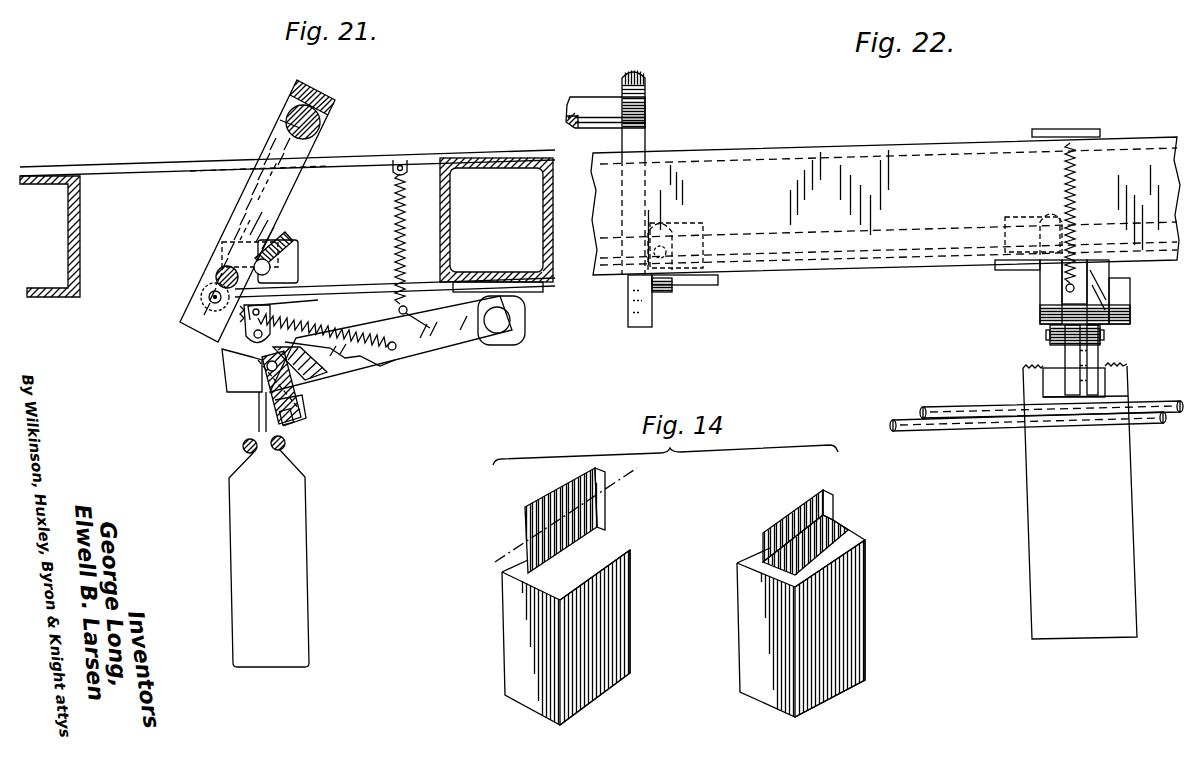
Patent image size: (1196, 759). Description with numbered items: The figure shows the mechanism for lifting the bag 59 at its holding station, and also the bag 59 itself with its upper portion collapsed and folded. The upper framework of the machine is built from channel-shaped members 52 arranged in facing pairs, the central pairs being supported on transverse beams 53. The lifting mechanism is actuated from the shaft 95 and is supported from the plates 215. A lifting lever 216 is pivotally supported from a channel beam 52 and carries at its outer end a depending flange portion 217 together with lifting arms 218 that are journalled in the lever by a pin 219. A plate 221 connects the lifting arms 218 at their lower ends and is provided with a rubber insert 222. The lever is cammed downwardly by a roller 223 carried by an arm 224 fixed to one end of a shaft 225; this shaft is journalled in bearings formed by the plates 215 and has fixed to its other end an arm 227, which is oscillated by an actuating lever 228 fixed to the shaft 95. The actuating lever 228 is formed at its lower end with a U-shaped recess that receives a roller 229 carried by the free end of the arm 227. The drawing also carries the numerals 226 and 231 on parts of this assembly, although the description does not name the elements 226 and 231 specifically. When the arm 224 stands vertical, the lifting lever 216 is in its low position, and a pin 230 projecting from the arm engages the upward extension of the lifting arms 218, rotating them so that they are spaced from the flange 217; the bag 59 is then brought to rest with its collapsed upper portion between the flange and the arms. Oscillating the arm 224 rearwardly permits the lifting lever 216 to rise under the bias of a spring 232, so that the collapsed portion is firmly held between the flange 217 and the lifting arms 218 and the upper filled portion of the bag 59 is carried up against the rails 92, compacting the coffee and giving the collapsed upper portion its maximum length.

In FIG. 21, the channel-shaped member 52 is at (466, 160).
In FIG. 21, the transverse beam 53 is at (80, 213).
In FIG. 21, the bag 59 is at (297, 538).
In FIG. 22, the bag 59 is at (1122, 513).
In FIG. 14, the bag 59 is at (622, 625).
In FIG. 21, the rails 92 is at (243, 445).
In FIG. 22, the rails 92 is at (964, 421).
In FIG. 21, the shaft 95 is at (320, 120).
In FIG. 22, the shaft 95 is at (596, 98).
In FIG. 21, the plates 215 is at (173, 164).
In FIG. 21, the lifting lever 216 is at (462, 350).
In FIG. 21, the depending flange portion 217 is at (259, 416).
In FIG. 21, the lifting arms 218 is at (298, 396).
In FIG. 22, the lifting arms 218 is at (1092, 362).
In FIG. 21, the pin 219 is at (243, 371).
In FIG. 22, the pin 219 is at (1048, 338).
In FIG. 21, the plate 221 is at (305, 412).
In FIG. 22, the plate 221 is at (1107, 378).
In FIG. 21, the rubber insert 222 is at (292, 422).
In FIG. 21, the roller 223 is at (318, 374).
In FIG. 21, the arm 224 is at (300, 312).
In FIG. 22, the arm 224 is at (1050, 288).
In FIG. 21, the shaft 225 is at (283, 254).
In FIG. 22, the shaft 225 is at (902, 240).
In FIG. 22, the guide 226 is at (703, 230).
In FIG. 21, the arm 227 is at (190, 270).
In FIG. 22, the arm 227 is at (672, 291).
In FIG. 21, the actuating lever 228 is at (283, 189).
In FIG. 22, the actuating lever 228 is at (646, 136).
In FIG. 21, the roller 229 is at (201, 298).
In FIG. 22, the roller 229 is at (628, 308).
In FIG. 21, the pin 230 is at (243, 326).
In FIG. 22, the pin 230 is at (1100, 278).
In FIG. 21, the coil spring 231 is at (392, 362).
In FIG. 22, the coil spring 231 is at (1128, 296).
In FIG. 21, the spring 232 is at (397, 217).
In FIG. 22, the spring 232 is at (1079, 170).